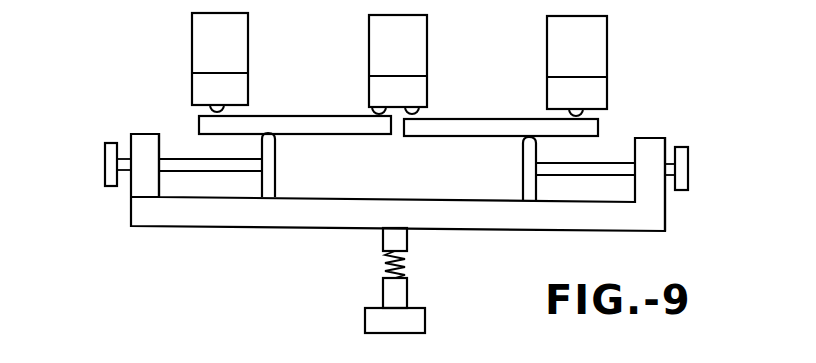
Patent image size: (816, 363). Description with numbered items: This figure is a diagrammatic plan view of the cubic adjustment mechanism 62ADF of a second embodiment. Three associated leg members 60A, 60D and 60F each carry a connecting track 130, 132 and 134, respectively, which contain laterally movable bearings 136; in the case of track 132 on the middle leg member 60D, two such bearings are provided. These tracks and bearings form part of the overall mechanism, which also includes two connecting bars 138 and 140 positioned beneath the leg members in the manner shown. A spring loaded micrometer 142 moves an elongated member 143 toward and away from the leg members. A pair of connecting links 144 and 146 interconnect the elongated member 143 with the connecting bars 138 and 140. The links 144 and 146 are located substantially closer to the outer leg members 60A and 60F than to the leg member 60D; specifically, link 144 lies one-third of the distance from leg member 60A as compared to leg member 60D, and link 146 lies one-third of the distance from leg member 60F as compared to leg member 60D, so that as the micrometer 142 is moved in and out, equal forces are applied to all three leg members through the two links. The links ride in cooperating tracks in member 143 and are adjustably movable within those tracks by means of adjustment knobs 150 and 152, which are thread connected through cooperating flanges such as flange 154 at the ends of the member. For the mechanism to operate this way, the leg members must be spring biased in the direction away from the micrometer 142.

The leg member 60A is at (172, 61).
The leg member 60D is at (433, 63).
The leg member 60F is at (612, 64).
The connecting track 130 is at (198, 87).
The connecting track 132 is at (413, 92).
The connecting track 134 is at (593, 90).
The laterally movable bearing 136 is at (207, 110).
The connecting bar 138 is at (296, 119).
The connecting bar 140 is at (484, 120).
The spring loaded micrometer 142 is at (400, 291).
The elongated member 143 is at (275, 221).
The connecting link 144 is at (271, 172).
The connecting link 146 is at (523, 187).
The adjustment knob 150 is at (104, 156).
The adjustment knob 152 is at (688, 158).
The cooperating flange 154 is at (137, 198).
The adjustment fixture assembly 62ADF is at (296, 297).